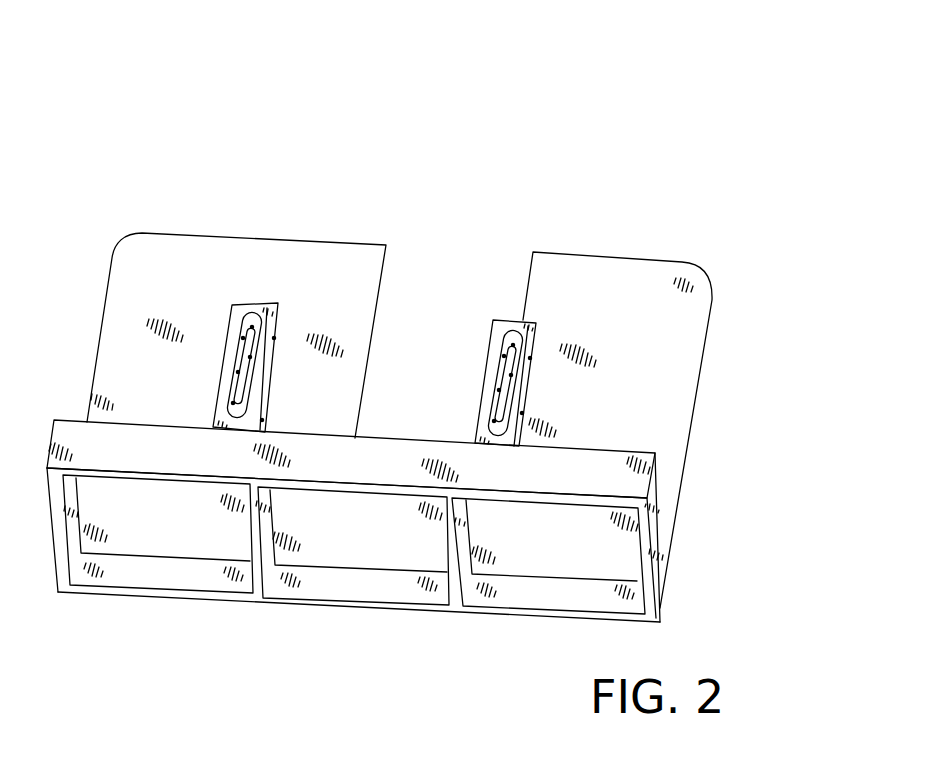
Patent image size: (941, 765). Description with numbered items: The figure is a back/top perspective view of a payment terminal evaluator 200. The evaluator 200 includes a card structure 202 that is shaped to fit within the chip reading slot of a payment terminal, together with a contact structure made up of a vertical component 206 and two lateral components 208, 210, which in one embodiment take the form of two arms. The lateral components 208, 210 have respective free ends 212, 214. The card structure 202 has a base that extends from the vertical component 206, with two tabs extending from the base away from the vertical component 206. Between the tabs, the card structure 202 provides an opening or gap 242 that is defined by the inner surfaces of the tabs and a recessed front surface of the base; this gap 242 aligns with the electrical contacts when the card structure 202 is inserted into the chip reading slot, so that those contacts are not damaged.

The payment terminal evaluator 200 is at (814, 153).
The card structure 202 is at (730, 371).
The vertical component 206 is at (657, 528).
The lateral component 208 is at (233, 320).
The lateral component 210 is at (494, 320).
The free end 212 is at (277, 305).
The free end 214 is at (538, 347).
The gap 242 is at (450, 245).